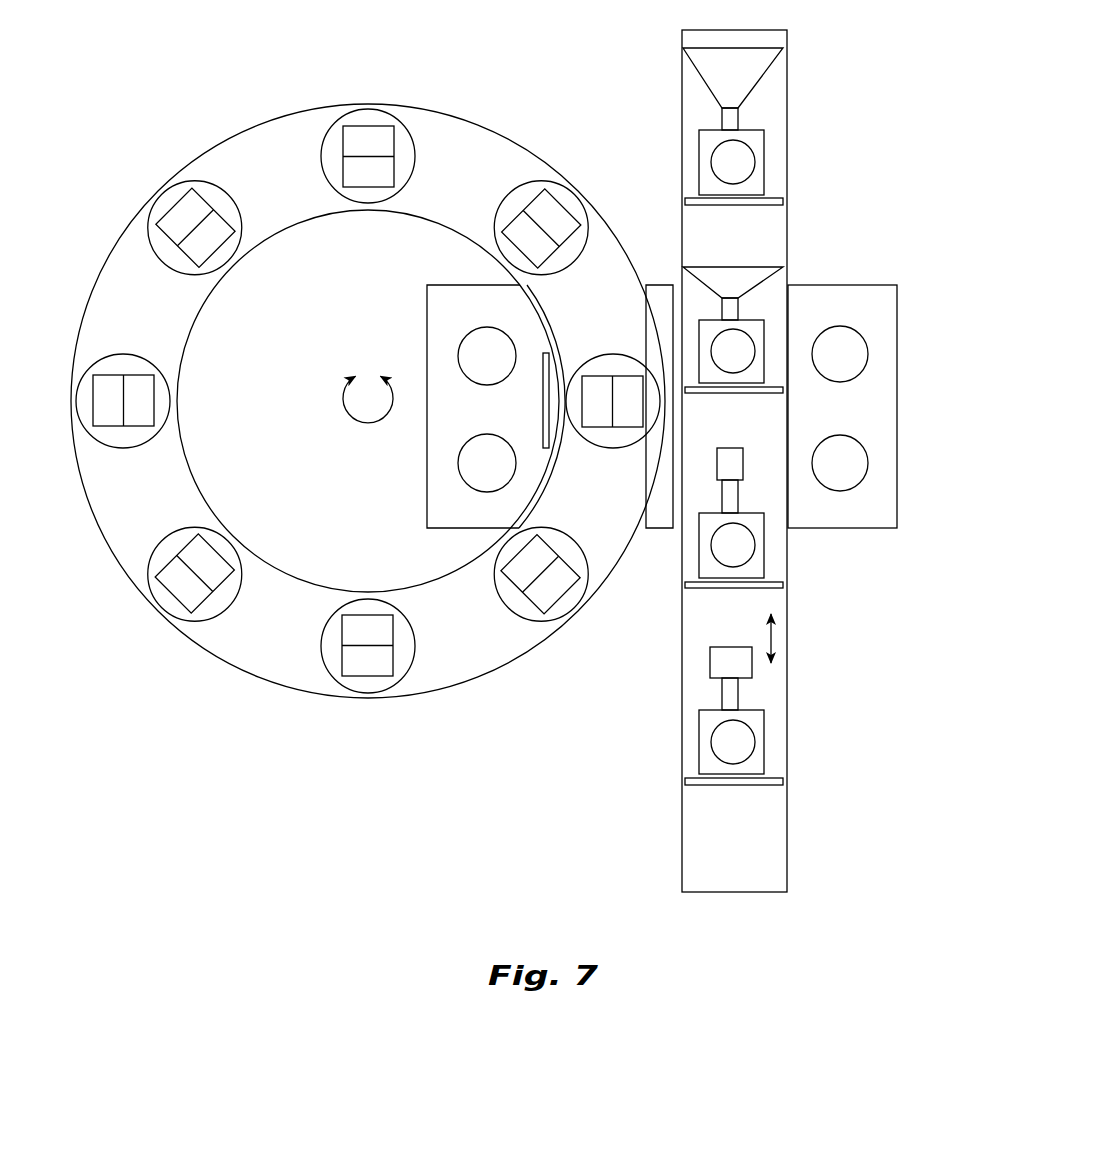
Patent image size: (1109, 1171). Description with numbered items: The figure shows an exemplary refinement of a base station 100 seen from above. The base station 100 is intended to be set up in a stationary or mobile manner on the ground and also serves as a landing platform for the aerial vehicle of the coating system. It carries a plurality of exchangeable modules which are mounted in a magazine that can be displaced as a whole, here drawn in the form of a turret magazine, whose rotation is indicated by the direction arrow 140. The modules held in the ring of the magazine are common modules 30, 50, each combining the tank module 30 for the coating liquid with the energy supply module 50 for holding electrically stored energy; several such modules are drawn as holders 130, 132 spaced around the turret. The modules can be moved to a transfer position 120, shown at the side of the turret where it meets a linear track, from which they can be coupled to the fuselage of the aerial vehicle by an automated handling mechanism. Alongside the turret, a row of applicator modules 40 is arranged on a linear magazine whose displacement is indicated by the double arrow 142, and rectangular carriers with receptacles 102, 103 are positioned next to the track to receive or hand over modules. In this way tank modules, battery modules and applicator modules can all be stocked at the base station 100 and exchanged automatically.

The base station 100 is at (243, 100).
The tank module 30 is at (370, 104).
The energy supply module 50 is at (535, 178).
The holding station 130 is at (190, 164).
The linear conveyor 132 is at (790, 116).
The applicator module 40 is at (687, 148).
The receptacle 102 is at (486, 358).
The holder 103 is at (478, 458).
The transfer position 120 is at (537, 396).
The rotation direction 140 is at (352, 420).
The linear movement direction 142 is at (776, 640).